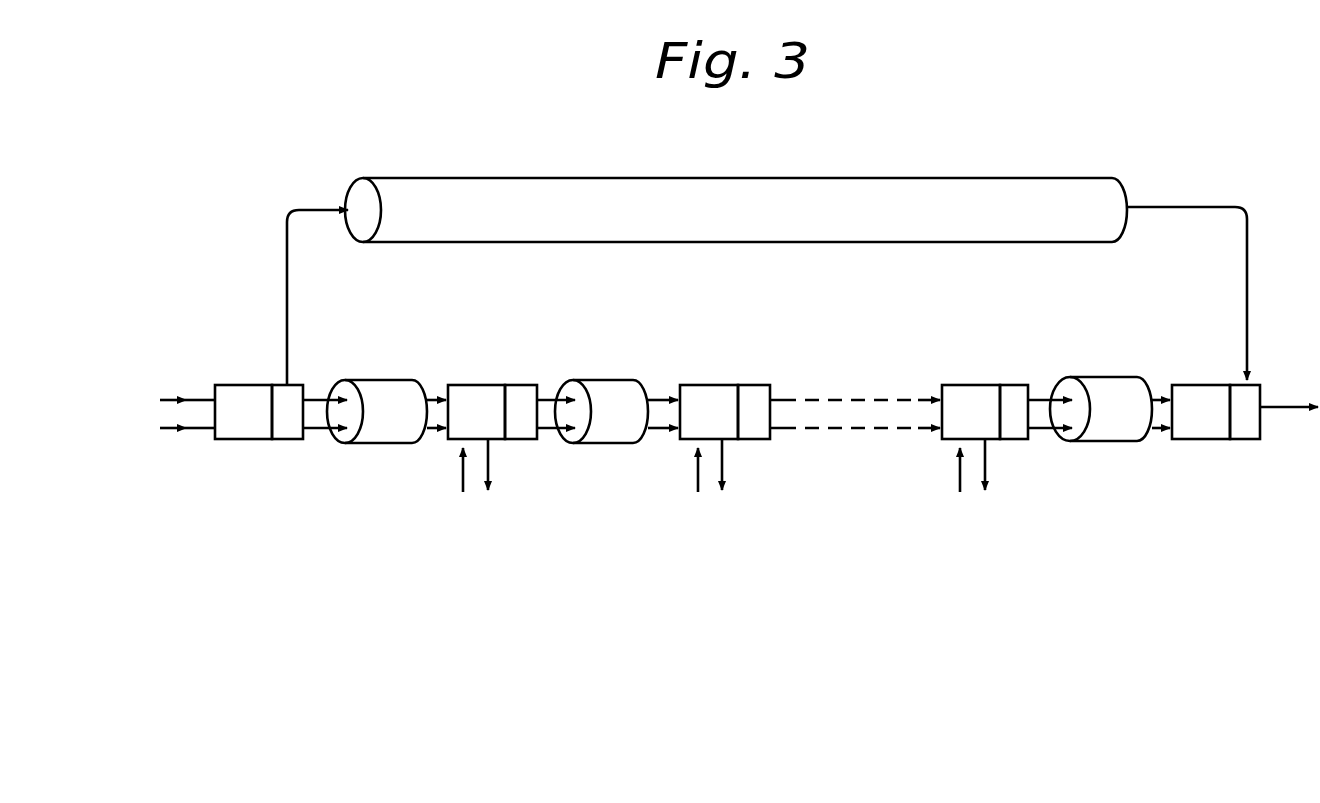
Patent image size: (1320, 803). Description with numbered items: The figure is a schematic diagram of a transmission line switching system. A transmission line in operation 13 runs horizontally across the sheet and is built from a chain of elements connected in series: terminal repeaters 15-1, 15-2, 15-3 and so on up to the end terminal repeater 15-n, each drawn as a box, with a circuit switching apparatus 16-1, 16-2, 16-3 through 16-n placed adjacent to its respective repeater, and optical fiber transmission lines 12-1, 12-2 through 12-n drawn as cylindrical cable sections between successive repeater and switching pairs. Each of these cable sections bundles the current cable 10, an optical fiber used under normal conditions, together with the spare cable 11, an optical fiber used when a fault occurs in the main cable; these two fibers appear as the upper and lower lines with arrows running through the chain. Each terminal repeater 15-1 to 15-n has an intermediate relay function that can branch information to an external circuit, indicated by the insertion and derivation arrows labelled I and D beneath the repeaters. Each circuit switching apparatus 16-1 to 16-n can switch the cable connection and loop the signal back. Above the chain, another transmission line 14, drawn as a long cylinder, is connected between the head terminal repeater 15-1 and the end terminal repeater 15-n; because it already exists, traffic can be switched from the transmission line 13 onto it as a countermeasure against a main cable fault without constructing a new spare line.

The current cable 10 is at (322, 430).
The spare cable 11 is at (316, 394).
The optical fiber transmission line 12-1 is at (383, 380).
The optical fiber transmission line 12-2 is at (604, 380).
The optical fiber transmission line 12-n is at (1098, 376).
The transmission line in operation 13 is at (735, 578).
The another transmission line 14 is at (822, 168).
The terminal repeater 15-1 is at (240, 439).
The terminal repeater 15-2 is at (455, 439).
The terminal repeater 15-3 is at (686, 439).
The terminal repeater 15-n is at (1180, 439).
The circuit switching apparatus 16-1 is at (297, 439).
The circuit switching apparatus 16-2 is at (527, 439).
The circuit switching apparatus 16-3 is at (760, 439).
The circuit switching apparatus 16-n is at (1250, 439).